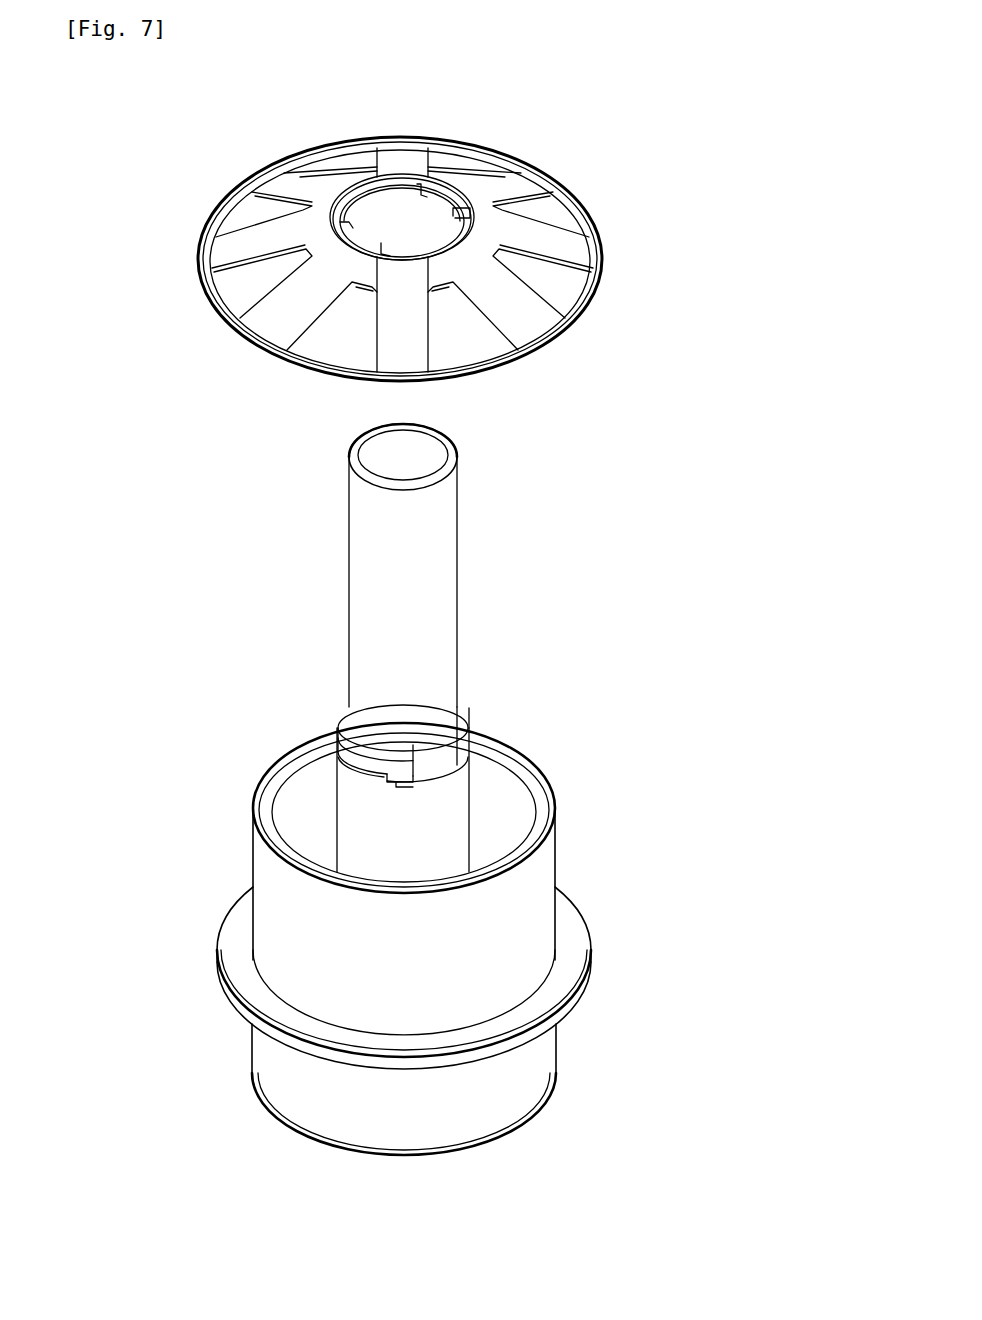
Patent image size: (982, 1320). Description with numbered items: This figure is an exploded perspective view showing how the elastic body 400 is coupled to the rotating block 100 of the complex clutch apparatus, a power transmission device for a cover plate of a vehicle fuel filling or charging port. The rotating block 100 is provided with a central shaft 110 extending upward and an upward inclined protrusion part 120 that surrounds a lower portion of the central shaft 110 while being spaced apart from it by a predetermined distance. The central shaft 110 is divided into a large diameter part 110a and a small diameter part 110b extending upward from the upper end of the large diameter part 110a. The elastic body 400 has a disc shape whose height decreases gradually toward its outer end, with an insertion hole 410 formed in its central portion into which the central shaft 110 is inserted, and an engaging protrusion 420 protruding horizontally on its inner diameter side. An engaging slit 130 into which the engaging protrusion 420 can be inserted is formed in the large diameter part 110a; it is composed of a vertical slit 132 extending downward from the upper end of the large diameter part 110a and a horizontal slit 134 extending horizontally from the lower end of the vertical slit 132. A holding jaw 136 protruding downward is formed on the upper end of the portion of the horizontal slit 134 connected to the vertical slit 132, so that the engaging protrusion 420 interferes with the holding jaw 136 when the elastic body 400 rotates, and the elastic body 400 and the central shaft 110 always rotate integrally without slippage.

The rotating block 100 is at (262, 1067).
The central shaft 110 is at (532, 648).
The large diameter part 110a is at (493, 800).
The small diameter part 110b is at (448, 585).
The upward inclined protrusion part 120 is at (262, 868).
The engaging slit 130 is at (275, 763).
The vertical slit 132 is at (337, 717).
The horizontal slit 134 is at (355, 748).
The holding jaw 136 is at (395, 788).
The elastic body 400 is at (502, 148).
The insertion hole 410 is at (397, 210).
The engaging protrusion 420 is at (430, 200).